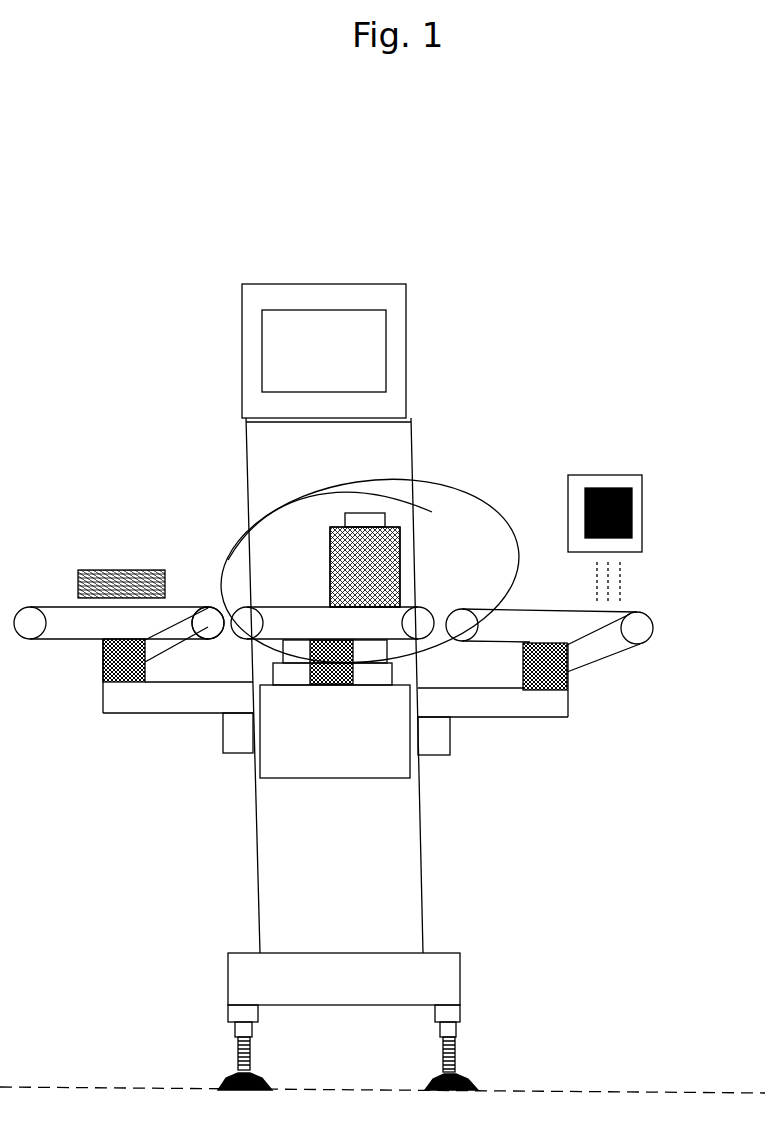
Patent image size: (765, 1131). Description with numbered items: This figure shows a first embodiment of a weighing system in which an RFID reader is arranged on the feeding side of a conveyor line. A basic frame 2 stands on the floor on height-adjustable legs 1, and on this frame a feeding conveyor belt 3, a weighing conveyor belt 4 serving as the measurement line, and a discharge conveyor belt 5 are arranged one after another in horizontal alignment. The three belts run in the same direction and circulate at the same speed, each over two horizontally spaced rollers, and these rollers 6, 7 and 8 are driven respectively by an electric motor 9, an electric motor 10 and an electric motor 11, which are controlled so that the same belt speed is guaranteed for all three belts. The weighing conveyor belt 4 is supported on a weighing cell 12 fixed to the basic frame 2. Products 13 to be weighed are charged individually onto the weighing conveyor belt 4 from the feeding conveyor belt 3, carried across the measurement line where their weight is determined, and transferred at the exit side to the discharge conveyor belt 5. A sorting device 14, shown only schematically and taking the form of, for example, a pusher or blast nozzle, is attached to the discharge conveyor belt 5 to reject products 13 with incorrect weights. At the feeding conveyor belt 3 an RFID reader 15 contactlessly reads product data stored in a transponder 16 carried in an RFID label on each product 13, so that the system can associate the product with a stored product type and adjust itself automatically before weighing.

The height-adjustable legs 1 is at (460, 1048).
The basic frame 2 is at (400, 873).
The feeding conveyor belt 3 is at (483, 612).
The weighing conveyor belt 4 is at (292, 605).
The discharge conveyor belt 5 is at (50, 606).
The rollers 6 is at (655, 638).
The rollers 7 is at (428, 617).
The rollers 8 is at (222, 612).
The electric motor 9 is at (523, 662).
The electric motor 10 is at (300, 684).
The electric motor 11 is at (100, 665).
The weighing cell 12 is at (336, 765).
The products 13 is at (365, 513).
The sorting device 14 is at (90, 570).
The RFID reader 15 is at (615, 470).
The transponder 16 is at (345, 513).